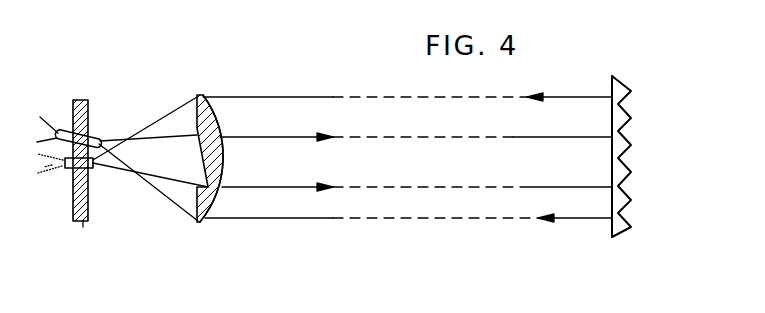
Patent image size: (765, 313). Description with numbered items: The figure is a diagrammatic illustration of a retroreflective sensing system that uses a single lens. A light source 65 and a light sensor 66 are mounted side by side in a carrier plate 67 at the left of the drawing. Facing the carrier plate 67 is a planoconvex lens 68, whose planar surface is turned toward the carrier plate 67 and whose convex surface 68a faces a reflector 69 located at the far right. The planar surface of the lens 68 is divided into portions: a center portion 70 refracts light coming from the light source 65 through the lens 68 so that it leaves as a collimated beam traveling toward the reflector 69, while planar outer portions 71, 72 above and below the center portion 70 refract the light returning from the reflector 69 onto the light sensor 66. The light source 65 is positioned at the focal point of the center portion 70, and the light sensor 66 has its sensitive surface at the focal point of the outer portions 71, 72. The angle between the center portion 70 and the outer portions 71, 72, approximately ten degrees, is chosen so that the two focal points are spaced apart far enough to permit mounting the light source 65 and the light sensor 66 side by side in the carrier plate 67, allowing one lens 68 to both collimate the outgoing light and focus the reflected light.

The light source 65 is at (93, 135).
The light sensor 66 is at (88, 208).
The carrier plate 67 is at (83, 224).
The planoconvex lens 68 is at (203, 96).
The convex surface 68a is at (228, 162).
The reflector 69 is at (627, 117).
The center portion 70 is at (203, 162).
The planar outer portion 71 is at (196, 118).
The planar outer portion 72 is at (197, 197).